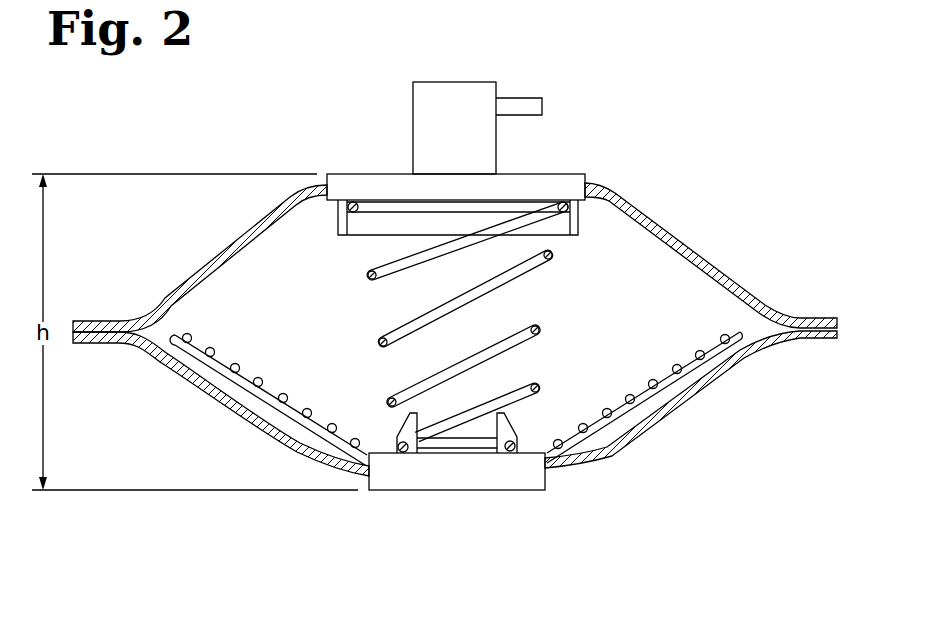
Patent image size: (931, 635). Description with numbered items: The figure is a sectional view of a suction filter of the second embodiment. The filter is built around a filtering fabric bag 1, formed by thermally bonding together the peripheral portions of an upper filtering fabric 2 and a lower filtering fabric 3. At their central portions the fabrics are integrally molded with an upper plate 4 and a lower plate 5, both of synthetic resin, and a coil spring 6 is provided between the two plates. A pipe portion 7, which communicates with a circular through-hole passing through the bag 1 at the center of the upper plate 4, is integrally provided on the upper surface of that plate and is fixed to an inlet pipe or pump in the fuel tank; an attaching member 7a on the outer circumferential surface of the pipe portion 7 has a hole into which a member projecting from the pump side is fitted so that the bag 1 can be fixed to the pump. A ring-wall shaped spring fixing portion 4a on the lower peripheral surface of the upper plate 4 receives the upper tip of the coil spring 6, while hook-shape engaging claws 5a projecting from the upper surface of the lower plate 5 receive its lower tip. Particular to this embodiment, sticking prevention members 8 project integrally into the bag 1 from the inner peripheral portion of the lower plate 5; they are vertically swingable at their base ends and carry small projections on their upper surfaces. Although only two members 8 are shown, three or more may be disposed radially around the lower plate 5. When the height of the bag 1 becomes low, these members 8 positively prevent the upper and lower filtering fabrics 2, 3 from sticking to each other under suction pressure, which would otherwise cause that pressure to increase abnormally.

The filtering fabric bag 1 is at (720, 232).
The upper filtering fabric 2 is at (737, 282).
The lower filtering fabric 3 is at (643, 433).
The upper plate 4 is at (552, 185).
The spring fixing portion 4a is at (580, 228).
The lower plate 5 is at (500, 477).
The hook-shape engaging claws 5a is at (393, 433).
The coil spring 6 is at (397, 347).
The pipe portion 7 is at (466, 103).
The attaching member 7a is at (530, 105).
The sticking prevention members 8 is at (245, 383).